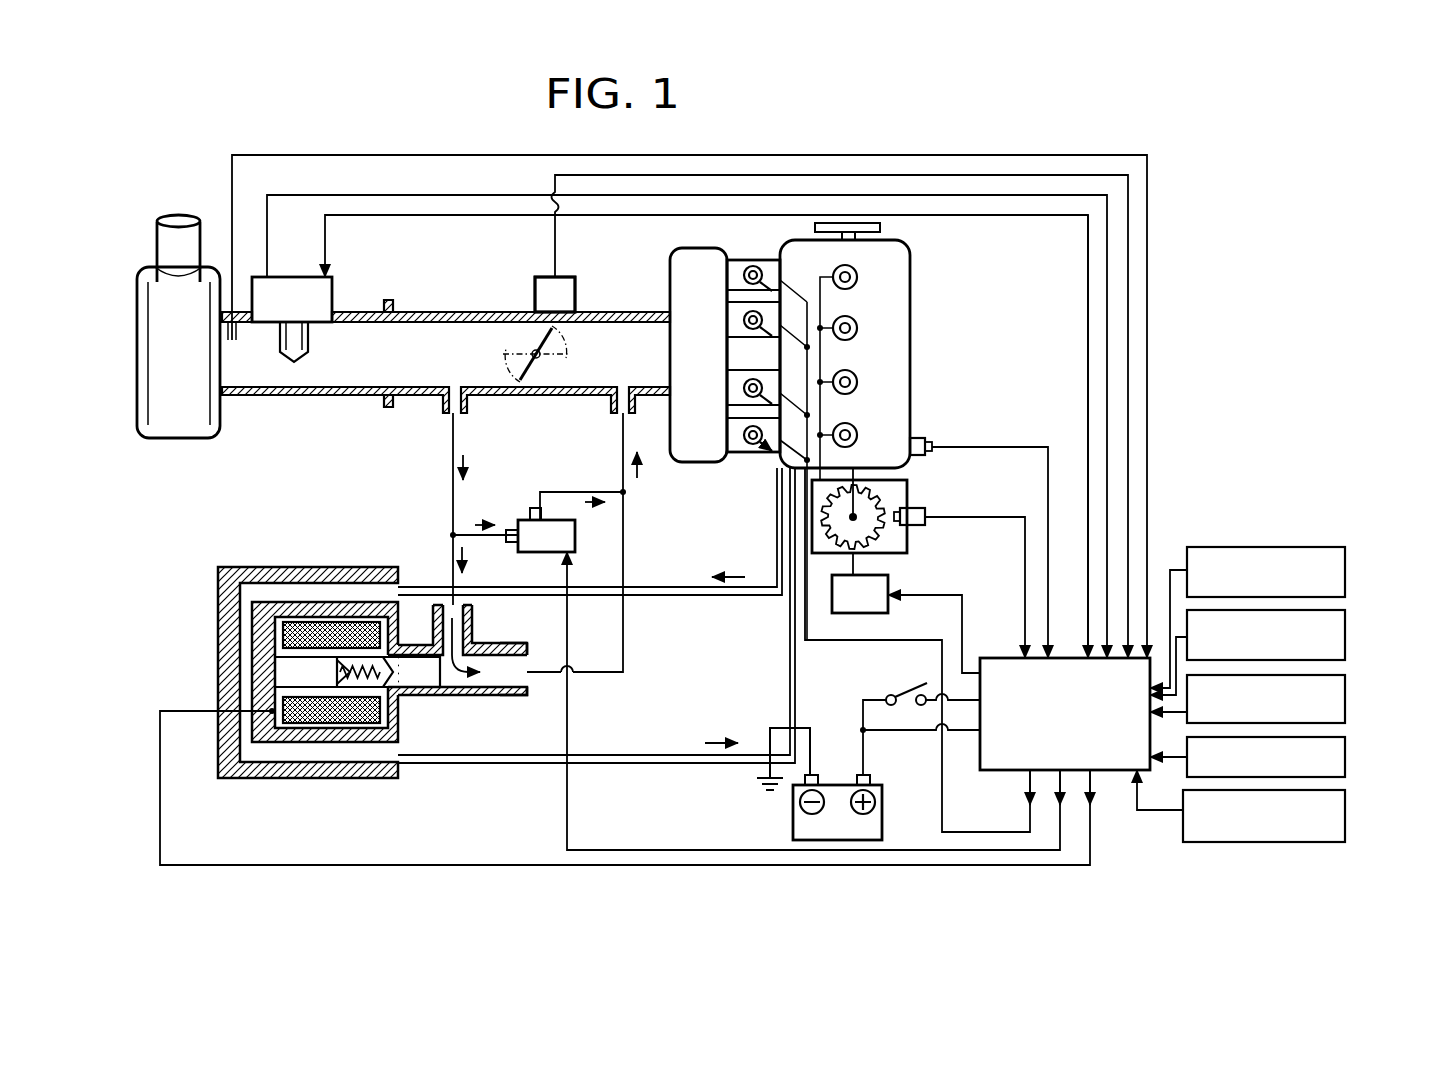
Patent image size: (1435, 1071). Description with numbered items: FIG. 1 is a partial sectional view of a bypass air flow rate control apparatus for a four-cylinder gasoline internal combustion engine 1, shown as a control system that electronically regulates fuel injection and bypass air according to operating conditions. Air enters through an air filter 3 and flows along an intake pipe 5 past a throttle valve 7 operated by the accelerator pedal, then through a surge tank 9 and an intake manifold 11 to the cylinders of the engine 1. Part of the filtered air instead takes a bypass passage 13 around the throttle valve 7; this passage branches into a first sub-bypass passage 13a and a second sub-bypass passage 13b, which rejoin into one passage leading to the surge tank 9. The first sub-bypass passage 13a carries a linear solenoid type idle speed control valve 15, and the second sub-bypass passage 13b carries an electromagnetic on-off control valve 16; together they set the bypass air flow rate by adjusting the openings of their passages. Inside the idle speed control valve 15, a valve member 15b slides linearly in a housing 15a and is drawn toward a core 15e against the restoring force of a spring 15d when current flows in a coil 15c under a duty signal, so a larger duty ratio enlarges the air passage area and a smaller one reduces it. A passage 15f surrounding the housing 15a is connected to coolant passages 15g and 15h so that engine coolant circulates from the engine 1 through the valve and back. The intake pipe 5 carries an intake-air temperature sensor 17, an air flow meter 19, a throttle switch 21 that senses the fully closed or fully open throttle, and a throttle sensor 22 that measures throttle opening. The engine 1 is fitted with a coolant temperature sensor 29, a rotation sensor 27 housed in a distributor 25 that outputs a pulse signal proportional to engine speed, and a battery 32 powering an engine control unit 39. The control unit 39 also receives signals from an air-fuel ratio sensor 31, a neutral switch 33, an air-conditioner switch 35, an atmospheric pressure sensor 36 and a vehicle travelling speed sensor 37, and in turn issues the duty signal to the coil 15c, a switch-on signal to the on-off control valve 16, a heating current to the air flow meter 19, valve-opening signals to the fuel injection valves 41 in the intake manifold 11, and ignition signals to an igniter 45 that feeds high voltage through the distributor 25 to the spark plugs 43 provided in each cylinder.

The internal combustion engine 1 is at (930, 297).
The air filter 3 is at (179, 438).
The intake pipe 5 is at (496, 312).
The throttle valve 7 is at (540, 378).
The surge tank 9 is at (694, 462).
The intake manifold 11 is at (771, 260).
The bypass passage 13 is at (452, 479).
The first sub-bypass passage 13a is at (452, 570).
The second sub-bypass passage 13b is at (482, 541).
The idle speed control valve 15 is at (320, 597).
The housing 15a is at (476, 699).
The valve member 15b is at (411, 653).
The coil 15c is at (320, 710).
The spring 15d is at (402, 706).
The core 15e is at (285, 672).
The passage 15f is at (268, 578).
The coolant passage 15g is at (710, 596).
The coolant passage 15h is at (662, 753).
The on-off control valve 16 is at (577, 540).
The intake-air temperature sensor 17 is at (228, 342).
The air flow meter 19 is at (293, 277).
The throttle switch 21 is at (562, 277).
The throttle sensor 22 is at (562, 277).
The distributor 25 is at (906, 553).
The rotation sensor 27 is at (940, 503).
The coolant temperature sensor 29 is at (928, 442).
The air-fuel ratio sensor 31 is at (1254, 546).
The battery 32 is at (882, 788).
The neutral switch 33 is at (1345, 637).
The air-conditioner switch 35 is at (1345, 700).
The atmospheric pressure sensor 36 is at (1345, 757).
The vehicle travelling speed sensor 37 is at (1320, 842).
The engine control unit 39 is at (992, 658).
The fuel injection valves 41 is at (740, 318).
The spark plug 43 is at (857, 285).
The igniter 45 is at (885, 607).